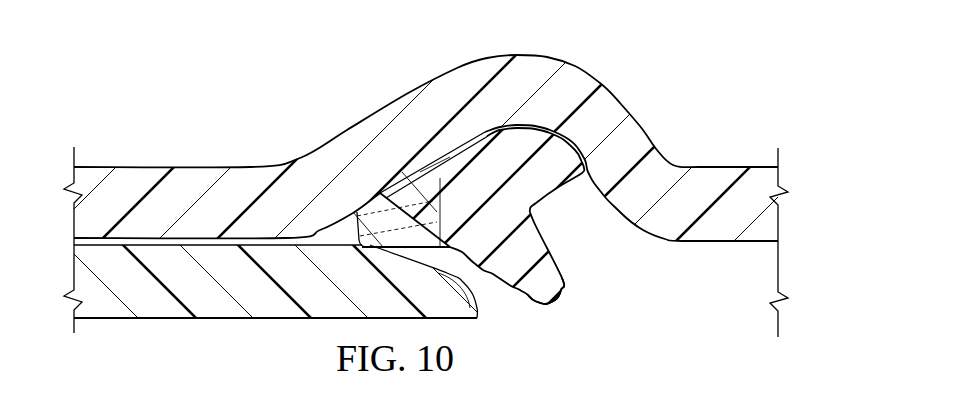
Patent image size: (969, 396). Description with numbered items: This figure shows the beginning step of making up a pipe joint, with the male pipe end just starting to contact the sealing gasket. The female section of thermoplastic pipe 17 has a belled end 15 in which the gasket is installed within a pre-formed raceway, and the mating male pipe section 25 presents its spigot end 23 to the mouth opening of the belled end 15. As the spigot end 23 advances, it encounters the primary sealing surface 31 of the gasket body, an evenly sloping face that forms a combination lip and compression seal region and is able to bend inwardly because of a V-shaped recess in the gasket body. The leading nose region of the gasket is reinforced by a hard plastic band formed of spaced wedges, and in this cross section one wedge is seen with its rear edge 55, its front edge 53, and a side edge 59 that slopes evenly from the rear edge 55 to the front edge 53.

The belled end 15 is at (197, 167).
The thermoplastic pipe 17 is at (717, 167).
The mating male pipe section 25 is at (155, 312).
The spigot end 23 is at (485, 275).
The rear edge 55 is at (443, 170).
The side edge 59 is at (407, 195).
The front edge 53 is at (357, 225).
The primary sealing surface 31 is at (523, 302).